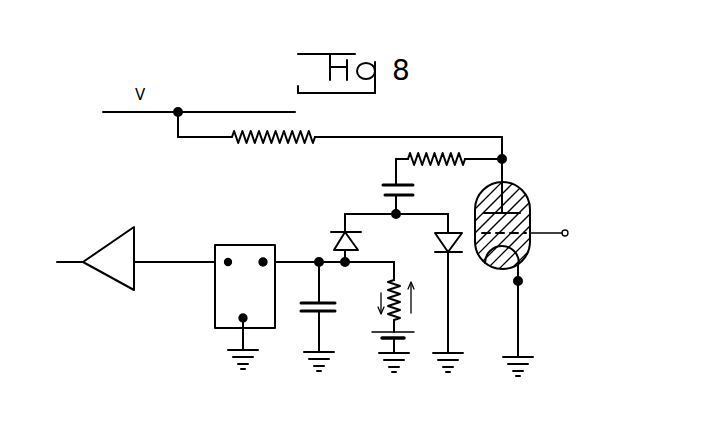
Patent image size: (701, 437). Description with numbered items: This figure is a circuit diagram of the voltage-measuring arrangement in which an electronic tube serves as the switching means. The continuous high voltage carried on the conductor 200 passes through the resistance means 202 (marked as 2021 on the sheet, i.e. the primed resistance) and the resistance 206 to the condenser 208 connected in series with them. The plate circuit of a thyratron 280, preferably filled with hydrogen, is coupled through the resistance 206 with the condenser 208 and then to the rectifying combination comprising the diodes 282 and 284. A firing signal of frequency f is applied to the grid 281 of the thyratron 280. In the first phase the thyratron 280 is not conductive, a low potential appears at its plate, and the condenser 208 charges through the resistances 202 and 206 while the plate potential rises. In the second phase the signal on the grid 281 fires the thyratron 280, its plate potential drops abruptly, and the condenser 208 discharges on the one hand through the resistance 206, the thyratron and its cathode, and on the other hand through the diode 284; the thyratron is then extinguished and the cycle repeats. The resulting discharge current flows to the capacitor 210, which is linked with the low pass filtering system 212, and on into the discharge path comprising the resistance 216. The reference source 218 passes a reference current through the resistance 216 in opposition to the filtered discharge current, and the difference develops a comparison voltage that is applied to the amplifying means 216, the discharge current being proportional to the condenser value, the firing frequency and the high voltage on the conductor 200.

The conductor 200 is at (210, 111).
The resistor 2021 is at (271, 156).
The resistance means 202 is at (254, 142).
The resistance 206 is at (428, 164).
The capacitor 208 is at (383, 192).
The capacitor 210 is at (307, 312).
The filtering system 212 is at (217, 322).
The resistance / amplifying means 216 is at (112, 248).
The reference source 218 is at (373, 341).
The thyratron 280 is at (528, 258).
The grid 281 is at (565, 228).
The diode 282 is at (457, 255).
The diode 284 is at (338, 238).